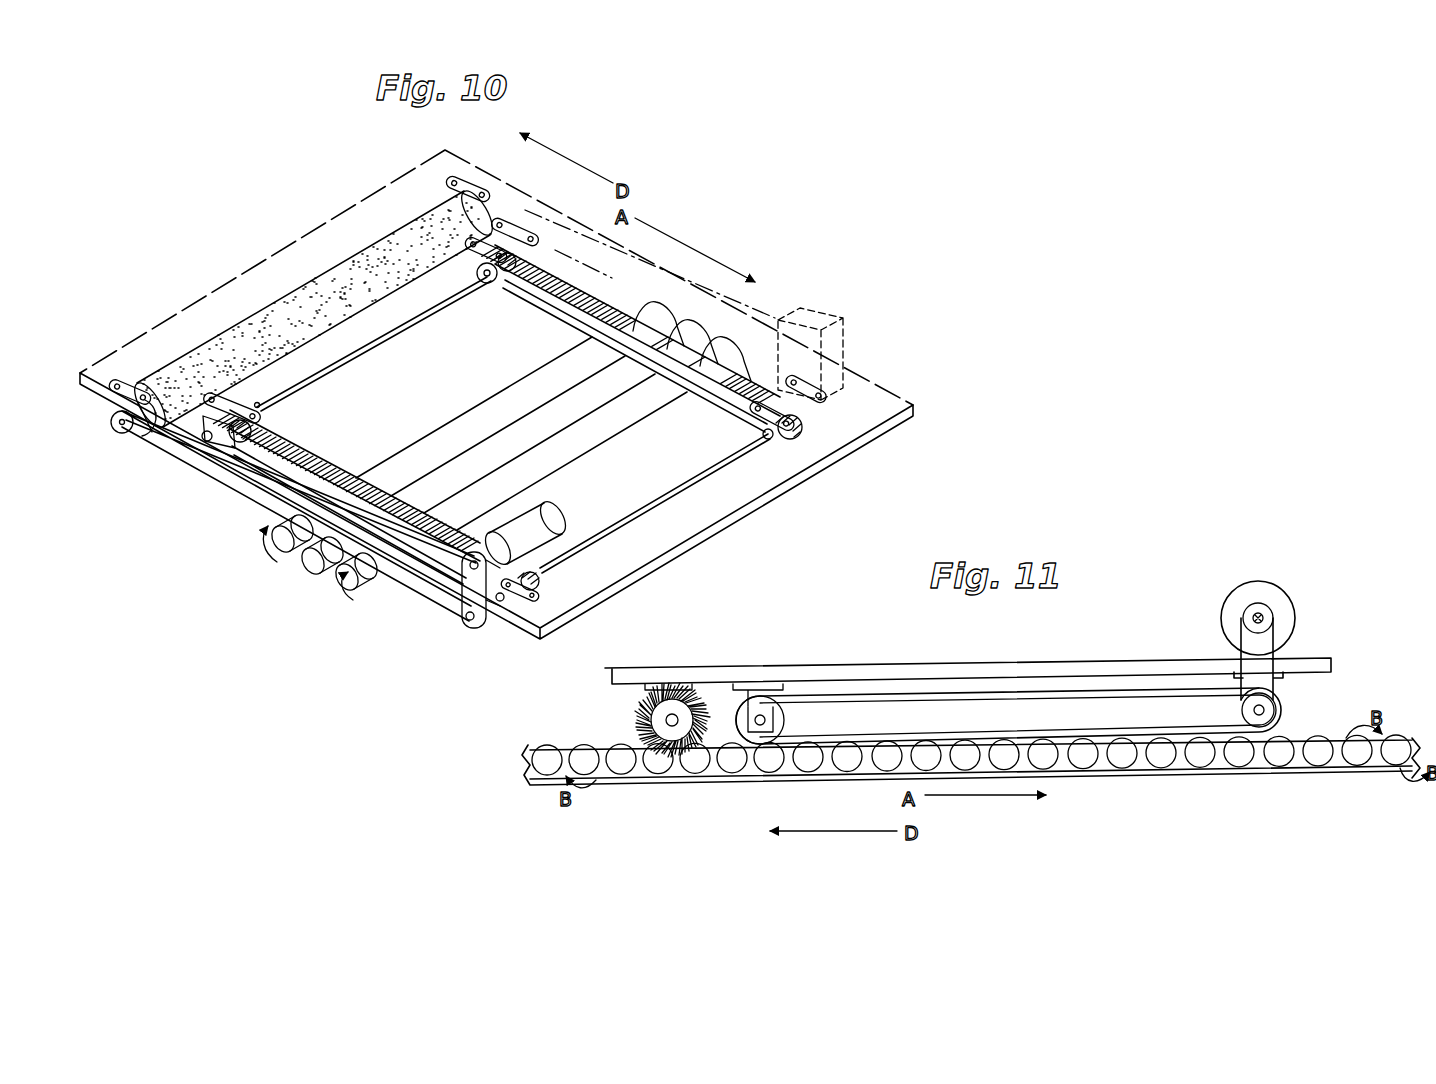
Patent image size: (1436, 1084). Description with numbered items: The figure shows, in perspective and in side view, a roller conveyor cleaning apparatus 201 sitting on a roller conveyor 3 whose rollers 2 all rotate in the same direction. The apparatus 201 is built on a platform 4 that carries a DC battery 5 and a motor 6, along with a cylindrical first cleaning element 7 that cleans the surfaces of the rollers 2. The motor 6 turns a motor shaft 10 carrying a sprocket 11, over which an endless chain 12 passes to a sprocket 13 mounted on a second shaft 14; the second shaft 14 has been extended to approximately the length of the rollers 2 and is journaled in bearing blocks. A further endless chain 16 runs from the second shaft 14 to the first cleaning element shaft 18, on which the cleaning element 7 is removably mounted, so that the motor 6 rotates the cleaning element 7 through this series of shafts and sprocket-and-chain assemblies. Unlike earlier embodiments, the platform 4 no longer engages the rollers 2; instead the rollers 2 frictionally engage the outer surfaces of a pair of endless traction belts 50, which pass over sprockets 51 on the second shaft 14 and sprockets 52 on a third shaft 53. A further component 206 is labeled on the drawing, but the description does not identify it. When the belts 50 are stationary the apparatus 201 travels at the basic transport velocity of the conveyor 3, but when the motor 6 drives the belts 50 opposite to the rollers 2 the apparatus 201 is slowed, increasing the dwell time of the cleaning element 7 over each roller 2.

In FIG. 10, the rollers 2 is at (320, 582).
In FIG. 11, the rollers 2 is at (655, 773).
In FIG. 11, the roller conveyor 3 is at (1307, 782).
In FIG. 10, the platform 4 is at (168, 318).
In FIG. 10, the DC battery 5 is at (800, 318).
In FIG. 11, the motor 6 is at (1240, 585).
In FIG. 10, the first cleaning element 7 is at (312, 275).
In FIG. 11, the first cleaning element 7 is at (651, 706).
In FIG. 11, the motor shaft 10 is at (1265, 618).
In FIG. 11, the sprocket 11 is at (1270, 605).
In FIG. 11, the endless chain 12 is at (1278, 633).
In FIG. 11, the sprocket 13 is at (1282, 700).
In FIG. 10, the second shaft 14 is at (463, 617).
In FIG. 11, the second shaft 14 is at (1283, 717).
In FIG. 10, the endless chain 16 is at (405, 592).
In FIG. 10, the first cleaning element shaft 18 is at (118, 426).
In FIG. 11, the first cleaning element shaft 18 is at (663, 725).
In FIG. 10, the endless traction belts 50 is at (563, 330).
In FIG. 11, the endless traction belts 50 is at (852, 695).
In FIG. 10, the sprockets 51 is at (787, 447).
In FIG. 10, the sprockets 52 is at (225, 447).
In FIG. 11, the sprockets 52 is at (785, 719).
In FIG. 10, the third shaft 53 is at (317, 374).
In FIG. 11, the third shaft 53 is at (758, 730).
In FIG. 10, the roller conveyor cleaning apparatus 201 is at (196, 282).
In FIG. 11, the roller conveyor cleaning apparatus 201 is at (1284, 582).
In FIG. 10, the motor 206 is at (567, 503).